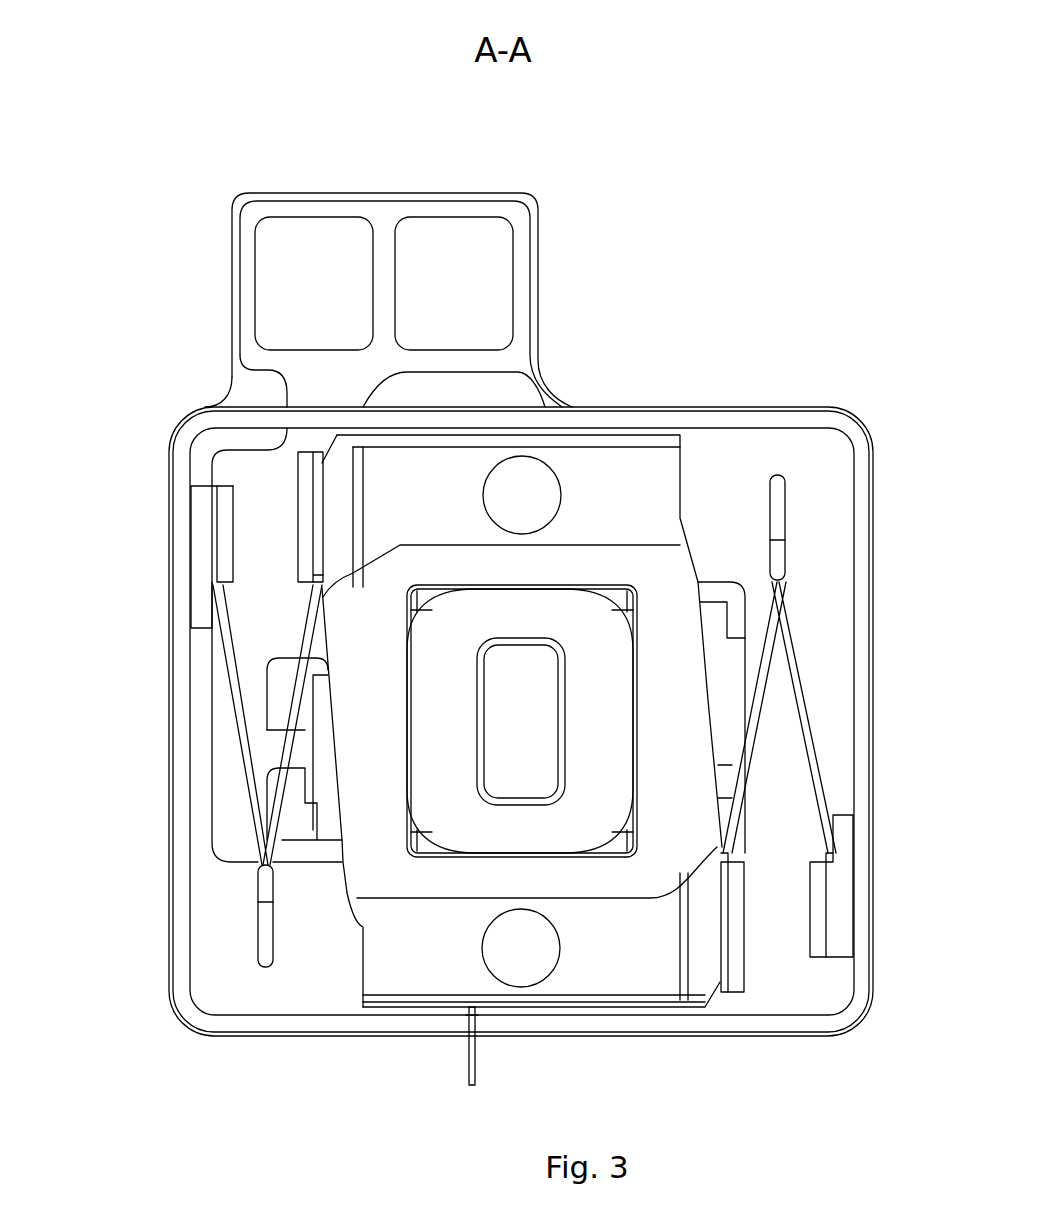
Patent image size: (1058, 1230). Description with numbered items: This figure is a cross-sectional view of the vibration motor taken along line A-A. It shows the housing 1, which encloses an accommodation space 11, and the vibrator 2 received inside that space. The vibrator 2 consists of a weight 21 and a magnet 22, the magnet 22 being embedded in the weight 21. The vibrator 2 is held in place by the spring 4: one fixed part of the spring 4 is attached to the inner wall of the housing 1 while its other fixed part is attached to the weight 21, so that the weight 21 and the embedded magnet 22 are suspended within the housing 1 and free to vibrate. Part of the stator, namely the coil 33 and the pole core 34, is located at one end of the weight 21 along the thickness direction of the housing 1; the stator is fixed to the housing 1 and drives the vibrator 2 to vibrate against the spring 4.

The housing 1 is at (862, 740).
The accommodation space 11 is at (817, 460).
The vibrator 2 is at (676, 325).
The weight 21 is at (458, 472).
The magnet 22 is at (627, 605).
The coil 33 is at (445, 733).
The pole core 34 is at (508, 672).
The spring 4 is at (263, 865).